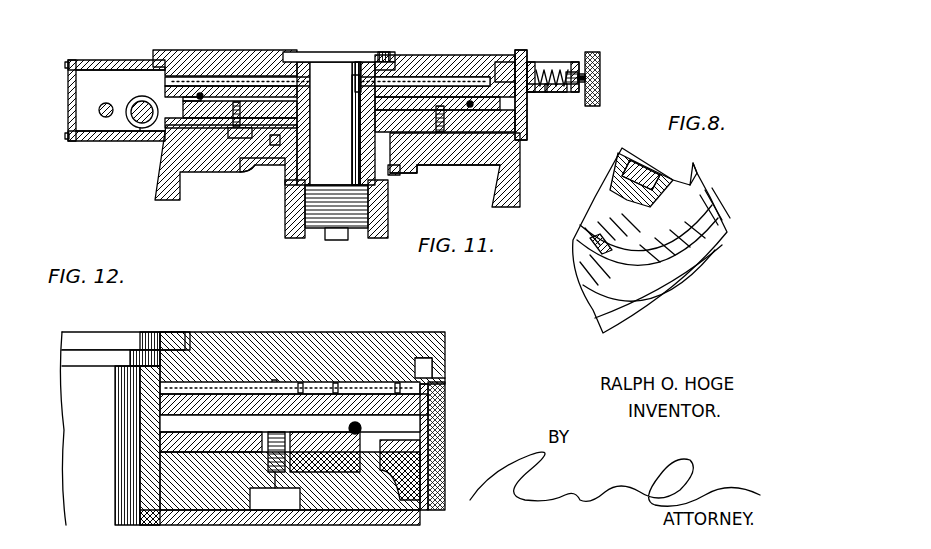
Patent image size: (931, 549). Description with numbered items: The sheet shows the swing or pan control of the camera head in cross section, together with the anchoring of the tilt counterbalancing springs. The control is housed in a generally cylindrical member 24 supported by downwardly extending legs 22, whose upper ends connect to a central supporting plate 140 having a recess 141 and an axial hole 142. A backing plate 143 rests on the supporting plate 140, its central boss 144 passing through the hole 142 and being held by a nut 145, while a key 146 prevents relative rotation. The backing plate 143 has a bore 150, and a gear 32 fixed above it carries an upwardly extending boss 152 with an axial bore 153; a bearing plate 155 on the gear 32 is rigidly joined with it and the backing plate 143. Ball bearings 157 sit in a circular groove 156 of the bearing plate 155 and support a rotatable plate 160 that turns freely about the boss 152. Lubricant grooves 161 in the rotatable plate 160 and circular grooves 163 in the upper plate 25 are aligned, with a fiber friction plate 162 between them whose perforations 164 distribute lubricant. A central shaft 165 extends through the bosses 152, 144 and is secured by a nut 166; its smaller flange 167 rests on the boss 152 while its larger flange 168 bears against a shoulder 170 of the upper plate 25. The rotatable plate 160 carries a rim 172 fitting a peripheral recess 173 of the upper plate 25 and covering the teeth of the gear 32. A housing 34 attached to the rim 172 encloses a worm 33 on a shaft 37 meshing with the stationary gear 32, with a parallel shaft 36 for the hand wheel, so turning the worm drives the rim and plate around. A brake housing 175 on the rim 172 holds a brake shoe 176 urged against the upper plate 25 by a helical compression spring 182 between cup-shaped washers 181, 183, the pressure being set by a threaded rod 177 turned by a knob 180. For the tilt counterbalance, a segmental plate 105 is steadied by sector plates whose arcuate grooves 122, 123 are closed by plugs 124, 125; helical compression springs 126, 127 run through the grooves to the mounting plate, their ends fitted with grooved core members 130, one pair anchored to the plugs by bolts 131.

In FIG. 11, the legs 22 is at (164, 172).
In FIG. 11, the cylindrical member 24 is at (680, 52).
In FIG. 12, the cylindrical member 24 is at (495, 366).
In FIG. 11, the upper plate 25 is at (430, 64).
In FIG. 12, the upper plate 25 is at (350, 336).
In FIG. 11, the gear 32 is at (165, 66).
In FIG. 12, the gear 32 is at (416, 455).
In FIG. 11, the worm 33 is at (126, 100).
In FIG. 11, the housing 34 is at (100, 58).
In FIG. 11, the shaft 36 is at (98, 110).
In FIG. 11, the shaft 37 is at (135, 122).
In FIG. 8, the segmental plate 105 is at (660, 290).
In FIG. 8, the arcuate groove 122 is at (592, 240).
In FIG. 8, the arcuate groove 123 is at (590, 290).
In FIG. 8, the plug 124 is at (636, 160).
In FIG. 8, the plug 125 is at (712, 205).
In FIG. 8, the helical compression spring 126 is at (588, 262).
In FIG. 8, the helical compression spring 127 is at (630, 318).
In FIG. 8, the core members 130 is at (625, 203).
In FIG. 8, the bolts 131 is at (696, 168).
In FIG. 11, the central supporting plate 140 is at (450, 165).
In FIG. 12, the central supporting plate 140 is at (400, 512).
In FIG. 11, the recess 141 is at (240, 136).
In FIG. 12, the recess 141 is at (295, 500).
In FIG. 11, the axial hole 142 is at (282, 150).
In FIG. 12, the axial hole 142 is at (258, 510).
In FIG. 11, the backing plate 143 is at (272, 165).
In FIG. 12, the backing plate 143 is at (280, 505).
In FIG. 11, the central boss 144 is at (392, 176).
In FIG. 12, the central boss 144 is at (140, 520).
In FIG. 11, the nut 145 is at (420, 170).
In FIG. 11, the key 146 is at (200, 128).
In FIG. 11, the bore 150 is at (288, 200).
In FIG. 12, the bore 150 is at (140, 492).
In FIG. 11, the boss 152 is at (302, 80).
In FIG. 12, the boss 152 is at (148, 392).
In FIG. 11, the axial bore 153 is at (360, 66).
In FIG. 12, the axial bore 153 is at (145, 436).
In FIG. 11, the bearing plate 155 is at (518, 140).
In FIG. 12, the bearing plate 155 is at (160, 416).
In FIG. 12, the circular groove 156 is at (348, 430).
In FIG. 11, the ball bearings 157 is at (200, 94).
In FIG. 12, the ball bearings 157 is at (362, 428).
In FIG. 11, the rotatable plate 160 is at (238, 78).
In FIG. 12, the rotatable plate 160 is at (445, 395).
In FIG. 12, the grooves 161 is at (292, 384).
In FIG. 11, the friction plate 162 is at (455, 97).
In FIG. 12, the friction plate 162 is at (258, 382).
In FIG. 11, the circular grooves 163 is at (505, 62).
In FIG. 12, the circular grooves 163 is at (400, 375).
In FIG. 12, the perforations 164 is at (366, 385).
In FIG. 11, the central shaft 165 is at (358, 125).
In FIG. 12, the central shaft 165 is at (120, 462).
In FIG. 11, the nut 166 is at (372, 232).
In FIG. 11, the flange 167 is at (388, 62).
In FIG. 12, the flange 167 is at (64, 356).
In FIG. 11, the flange 168 is at (312, 54).
In FIG. 12, the flange 168 is at (70, 332).
In FIG. 11, the shoulder 170 is at (295, 62).
In FIG. 12, the shoulder 170 is at (185, 332).
In FIG. 11, the rim 172 is at (530, 130).
In FIG. 12, the peripheral recess 173 is at (440, 360).
In FIG. 11, the brake housing 175 is at (560, 66).
In FIG. 11, the brake shoe 176 is at (533, 64).
In FIG. 11, the threaded rod 177 is at (600, 80).
In FIG. 11, the knob 180 is at (600, 62).
In FIG. 11, the cup-shaped washer 181 is at (570, 68).
In FIG. 11, the helical compression spring 182 is at (558, 94).
In FIG. 11, the cup-shaped washer 183 is at (537, 94).